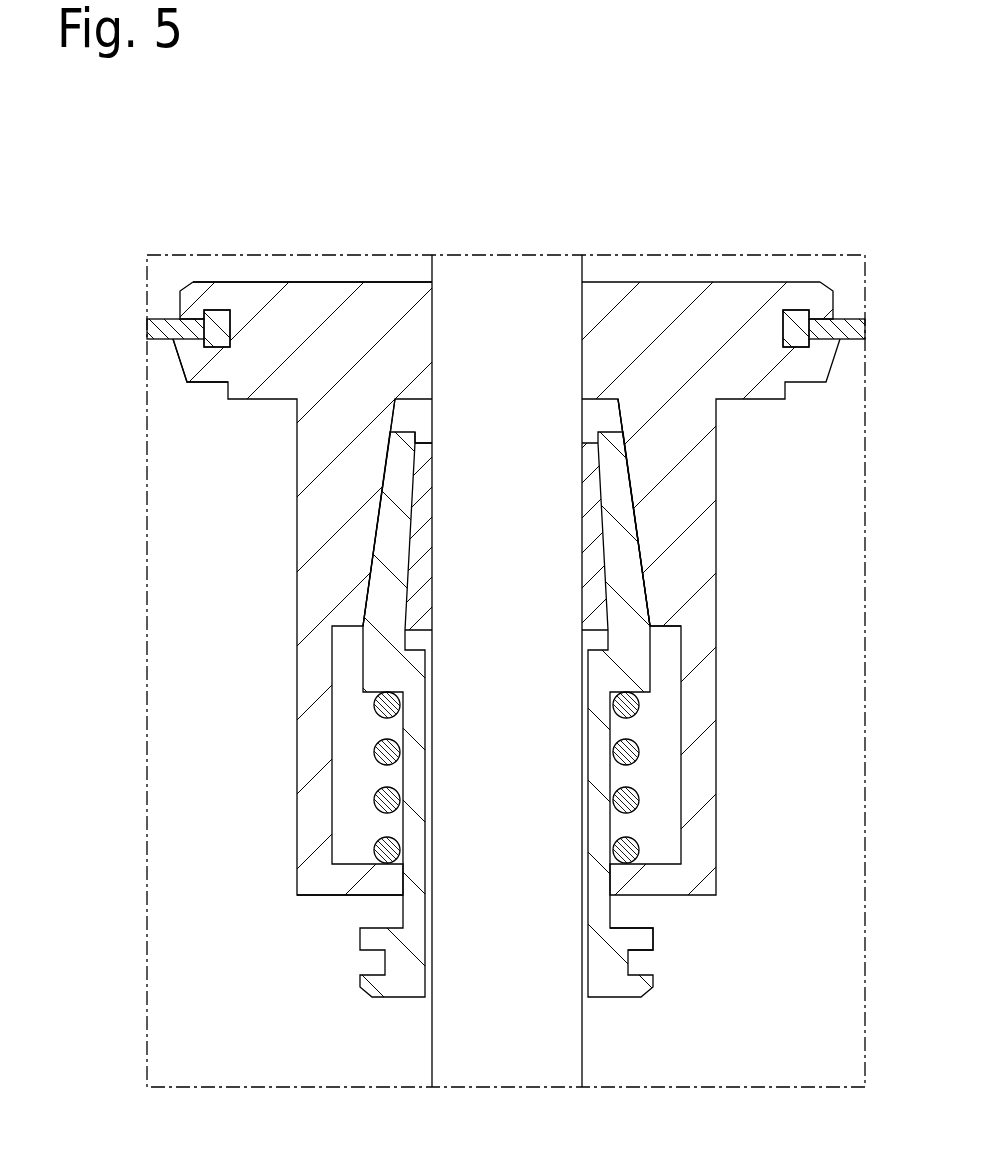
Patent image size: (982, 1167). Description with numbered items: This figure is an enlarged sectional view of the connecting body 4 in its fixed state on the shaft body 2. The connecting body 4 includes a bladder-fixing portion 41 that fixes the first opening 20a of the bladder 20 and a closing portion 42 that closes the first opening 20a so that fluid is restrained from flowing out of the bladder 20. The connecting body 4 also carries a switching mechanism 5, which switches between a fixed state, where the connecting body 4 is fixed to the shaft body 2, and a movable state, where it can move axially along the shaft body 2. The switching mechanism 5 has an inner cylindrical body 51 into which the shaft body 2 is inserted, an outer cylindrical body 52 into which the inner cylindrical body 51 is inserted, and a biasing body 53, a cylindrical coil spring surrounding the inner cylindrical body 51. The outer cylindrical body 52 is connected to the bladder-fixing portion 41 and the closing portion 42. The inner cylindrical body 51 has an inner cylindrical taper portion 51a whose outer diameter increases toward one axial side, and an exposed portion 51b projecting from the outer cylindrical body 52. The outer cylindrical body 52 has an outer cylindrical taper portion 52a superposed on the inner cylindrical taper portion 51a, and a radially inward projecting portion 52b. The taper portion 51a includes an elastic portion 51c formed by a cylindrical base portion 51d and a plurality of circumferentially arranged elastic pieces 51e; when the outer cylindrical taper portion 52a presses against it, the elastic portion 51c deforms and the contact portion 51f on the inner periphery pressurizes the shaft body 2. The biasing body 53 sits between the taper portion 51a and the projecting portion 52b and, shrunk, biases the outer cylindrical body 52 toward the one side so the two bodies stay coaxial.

The shaft body 2 is at (582, 1075).
The connecting body 4 is at (178, 1007).
The switching mechanism 5 is at (491, 583).
The bladder 20 is at (162, 319).
The first opening 20a is at (803, 310).
The bladder-fixing portion 41 is at (177, 358).
The closing portion 42 is at (386, 282).
The inner cylindrical body 51 is at (355, 664).
The inner cylindrical taper portion 51a is at (373, 548).
The exposed portion 51b is at (652, 936).
The elastic portion 51c is at (645, 588).
The base portion 51d is at (650, 660).
The elastic pieces 51e is at (637, 527).
The contact portion 51f is at (422, 443).
The outer cylindrical body 52 is at (284, 478).
The outer cylindrical taper portion 52a is at (618, 474).
The projecting portion 52b is at (378, 897).
The biasing body 53 is at (370, 797).